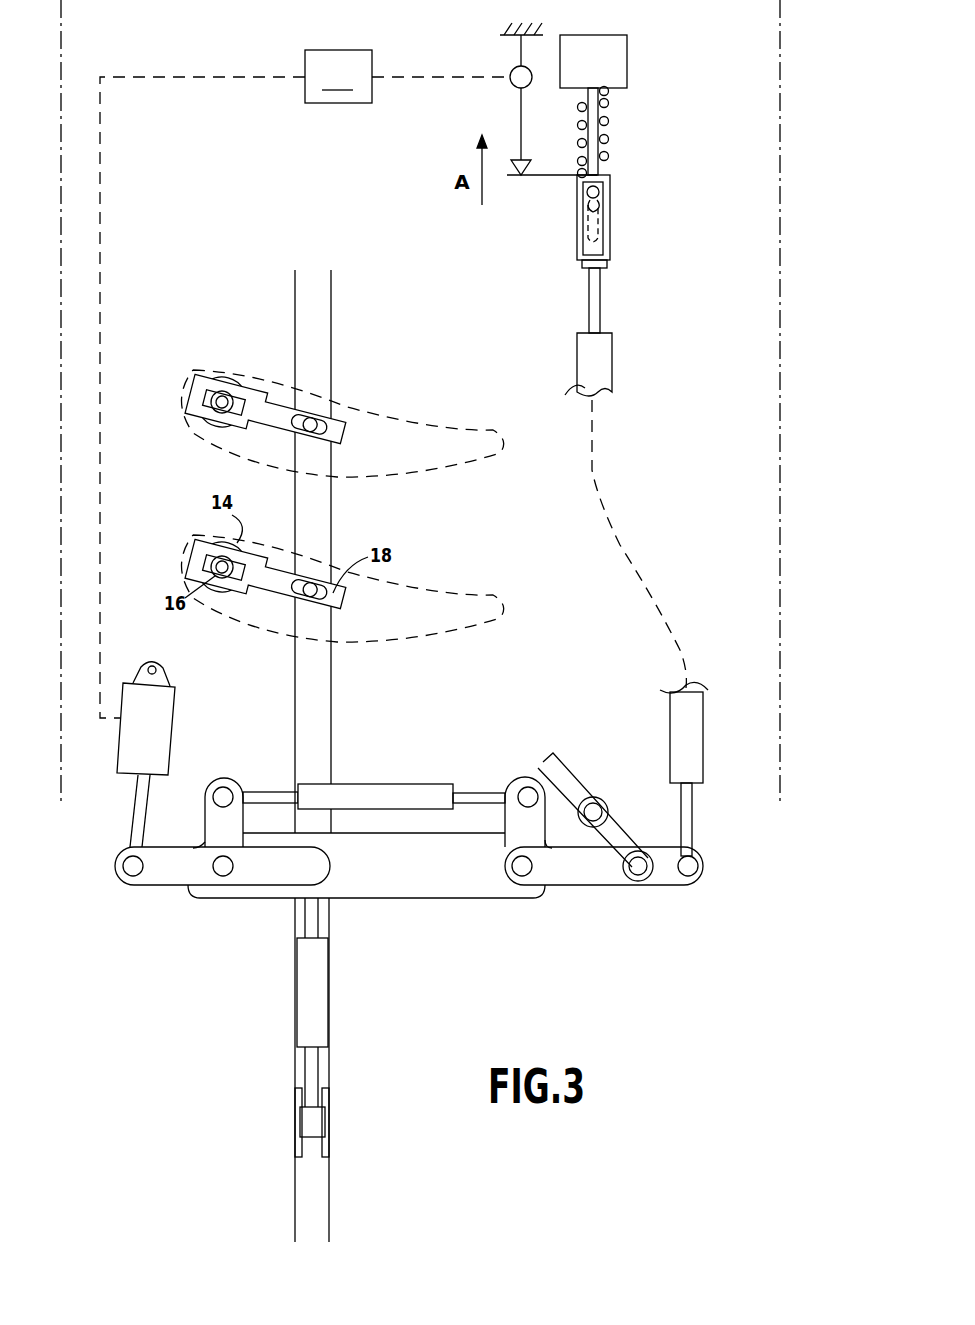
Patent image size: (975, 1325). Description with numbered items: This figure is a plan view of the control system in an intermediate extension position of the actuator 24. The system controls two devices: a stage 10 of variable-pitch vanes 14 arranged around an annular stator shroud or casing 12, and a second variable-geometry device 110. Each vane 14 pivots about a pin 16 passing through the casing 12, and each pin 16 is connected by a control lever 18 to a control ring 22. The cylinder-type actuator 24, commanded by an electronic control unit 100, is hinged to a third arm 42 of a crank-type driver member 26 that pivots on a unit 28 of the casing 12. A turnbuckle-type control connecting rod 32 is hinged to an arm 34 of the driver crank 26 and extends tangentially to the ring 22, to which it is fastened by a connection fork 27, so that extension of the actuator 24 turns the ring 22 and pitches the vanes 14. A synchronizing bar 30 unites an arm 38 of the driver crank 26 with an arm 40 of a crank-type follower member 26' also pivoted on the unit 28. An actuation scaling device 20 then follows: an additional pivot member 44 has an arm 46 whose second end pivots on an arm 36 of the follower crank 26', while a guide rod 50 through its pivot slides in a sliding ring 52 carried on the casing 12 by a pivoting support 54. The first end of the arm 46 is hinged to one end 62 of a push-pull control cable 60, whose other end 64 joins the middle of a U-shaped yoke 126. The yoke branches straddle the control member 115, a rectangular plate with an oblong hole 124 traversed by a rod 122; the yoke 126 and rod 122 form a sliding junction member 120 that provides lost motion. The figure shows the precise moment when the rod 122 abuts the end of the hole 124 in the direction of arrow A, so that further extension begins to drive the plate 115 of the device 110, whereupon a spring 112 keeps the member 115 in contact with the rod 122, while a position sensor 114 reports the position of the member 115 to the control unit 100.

The stage of variable pitch vanes 10 is at (247, 642).
The annular stator shroud 12 is at (60, 706).
The vane 14 is at (237, 378).
The pin 16 is at (215, 410).
The control lever 18 is at (333, 428).
The actuation scaling device 20 is at (560, 942).
The control ring 22 is at (318, 540).
The cylinder-type actuator 24 is at (145, 707).
The crank-type driver member 26 is at (155, 816).
The crank-type follower member 26' is at (585, 911).
The connection fork 27 is at (313, 1120).
The unit of the turbomachine casing 28 is at (378, 885).
The synchronizing bar 30 is at (360, 797).
The control connecting rod 32 is at (305, 1010).
The arm of the driver crank 34 is at (270, 878).
The arm of the follower crank 36 is at (567, 868).
The arm of the driver crank 38 is at (235, 815).
The arm of the follower crank 40 is at (525, 825).
The third arm of the driver crank 42 is at (158, 878).
The additional pivot member 44 is at (652, 893).
The arm of the additional crank 46 is at (665, 880).
The guide rod 50 is at (565, 770).
The sliding ring 52 is at (601, 805).
The pivoting support 54 is at (610, 810).
The control cable 60 is at (585, 380).
The end of the control cable 62 is at (692, 812).
The end of the control cable 64 is at (596, 282).
The electronic control unit 100 is at (305, 384).
The second device 110 is at (600, 55).
The spring 112 is at (609, 136).
The position sensor 114 is at (517, 84).
The control member 115 is at (578, 178).
The sliding junction member 120 is at (572, 228).
The rod 122 is at (580, 203).
The oblong hole 124 is at (596, 203).
The U-shaped yoke 126 is at (585, 266).